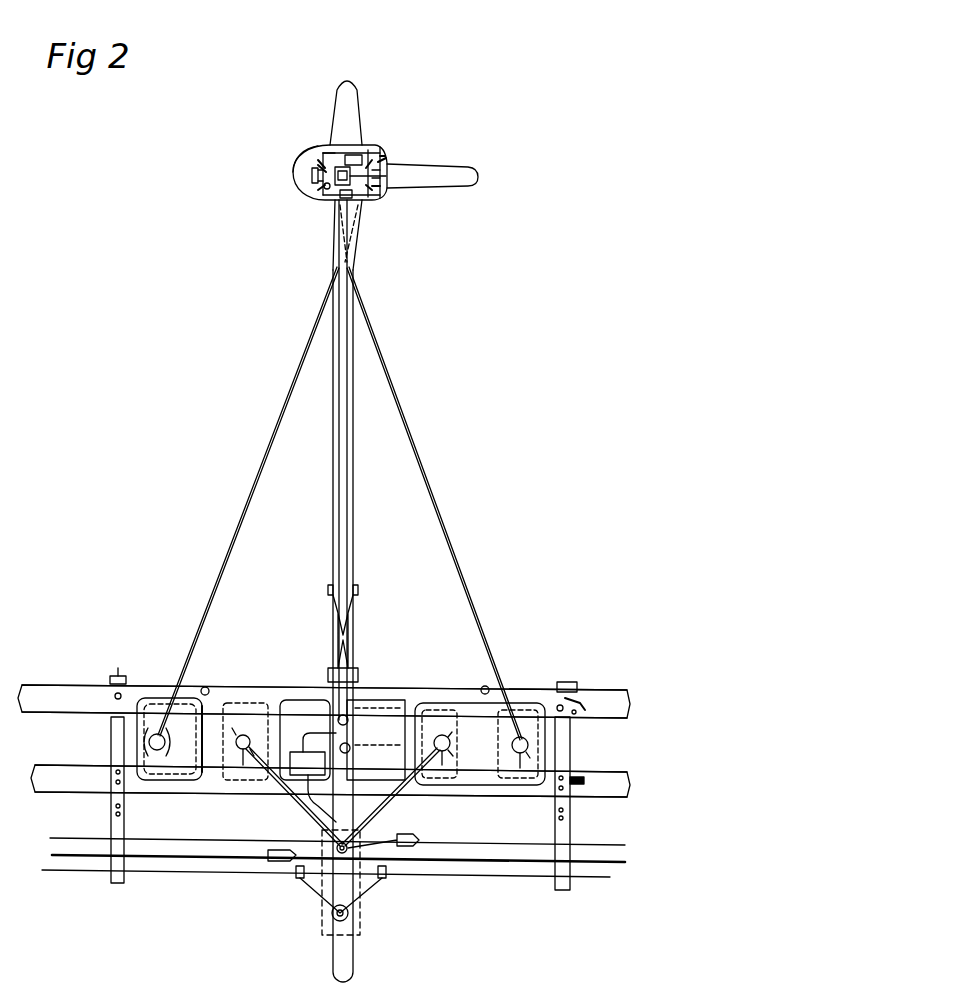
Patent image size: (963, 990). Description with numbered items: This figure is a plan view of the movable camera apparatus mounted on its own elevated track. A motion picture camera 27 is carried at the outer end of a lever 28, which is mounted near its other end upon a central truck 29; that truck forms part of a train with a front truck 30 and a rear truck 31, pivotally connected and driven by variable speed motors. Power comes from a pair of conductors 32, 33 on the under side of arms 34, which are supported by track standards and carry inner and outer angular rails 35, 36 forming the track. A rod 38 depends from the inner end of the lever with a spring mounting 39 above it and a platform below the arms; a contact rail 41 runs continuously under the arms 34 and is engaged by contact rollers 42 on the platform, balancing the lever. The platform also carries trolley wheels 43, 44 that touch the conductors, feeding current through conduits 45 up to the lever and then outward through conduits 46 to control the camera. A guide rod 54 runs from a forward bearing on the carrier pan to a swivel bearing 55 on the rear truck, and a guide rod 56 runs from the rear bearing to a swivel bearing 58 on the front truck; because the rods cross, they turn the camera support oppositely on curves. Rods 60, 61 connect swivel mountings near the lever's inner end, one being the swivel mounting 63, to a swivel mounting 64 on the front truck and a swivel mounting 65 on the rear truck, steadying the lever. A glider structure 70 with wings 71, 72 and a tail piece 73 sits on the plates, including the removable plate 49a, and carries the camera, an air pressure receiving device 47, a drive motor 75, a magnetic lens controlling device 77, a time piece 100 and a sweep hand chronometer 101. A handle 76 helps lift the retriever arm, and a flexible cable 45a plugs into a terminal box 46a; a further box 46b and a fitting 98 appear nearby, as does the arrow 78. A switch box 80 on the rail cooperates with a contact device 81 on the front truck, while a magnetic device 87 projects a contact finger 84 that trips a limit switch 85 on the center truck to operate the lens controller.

The wing 72 is at (366, 90).
The tail piece 73 is at (478, 177).
The wing 71 is at (360, 248).
The glider structure 70 is at (298, 184).
The motion picture camera 27 is at (330, 150).
The magnetic lens controlling device 77 is at (360, 157).
The time piece 100 is at (388, 160).
The removable plate 49a is at (320, 170).
The sweep hand chronometer 101 is at (384, 172).
The air pressure receiving device 47 is at (304, 172).
The lower connector 98 is at (384, 190).
The swivel bearing 58 is at (323, 190).
The drive motor 75 is at (345, 198).
The conduits 46 is at (375, 204).
The lever 28 is at (334, 504).
The guide rod 54 is at (412, 402).
The guide rod 56 is at (248, 492).
The handle 76 is at (355, 628).
The limit switch 85 is at (487, 685).
The inner angular rail 35 is at (620, 688).
The outer angular rail 36 is at (72, 784).
The switch box 80 is at (109, 666).
The contact device 81 is at (208, 686).
The magnetic device 87 is at (570, 682).
The contact finger 84 is at (584, 704).
The direction arrow 78 is at (100, 737).
The truck 30 is at (178, 762).
The swivel mounting 64 is at (240, 750).
The rod 60 is at (292, 810).
The flexible cable 45a is at (303, 728).
The terminal box 46a is at (340, 716).
The valve box 46b is at (330, 723).
The conduits 45 is at (318, 806).
The truck 29 is at (374, 728).
The rod 38 is at (350, 750).
The truck 31 is at (466, 728).
The swivel mounting 65 is at (447, 752).
The rod 61 is at (396, 806).
The swivel bearing 55 is at (534, 749).
The arms 34 is at (127, 832).
The conductor 33 is at (85, 843).
The conductor 32 is at (165, 860).
The contact rail 41 is at (200, 876).
The trolley wheel 43 is at (276, 860).
The trolley wheel 44 is at (415, 840).
The swivel mounting 63 is at (350, 852).
The contact rollers 42 is at (298, 878).
The spring mounting 39 is at (349, 916).